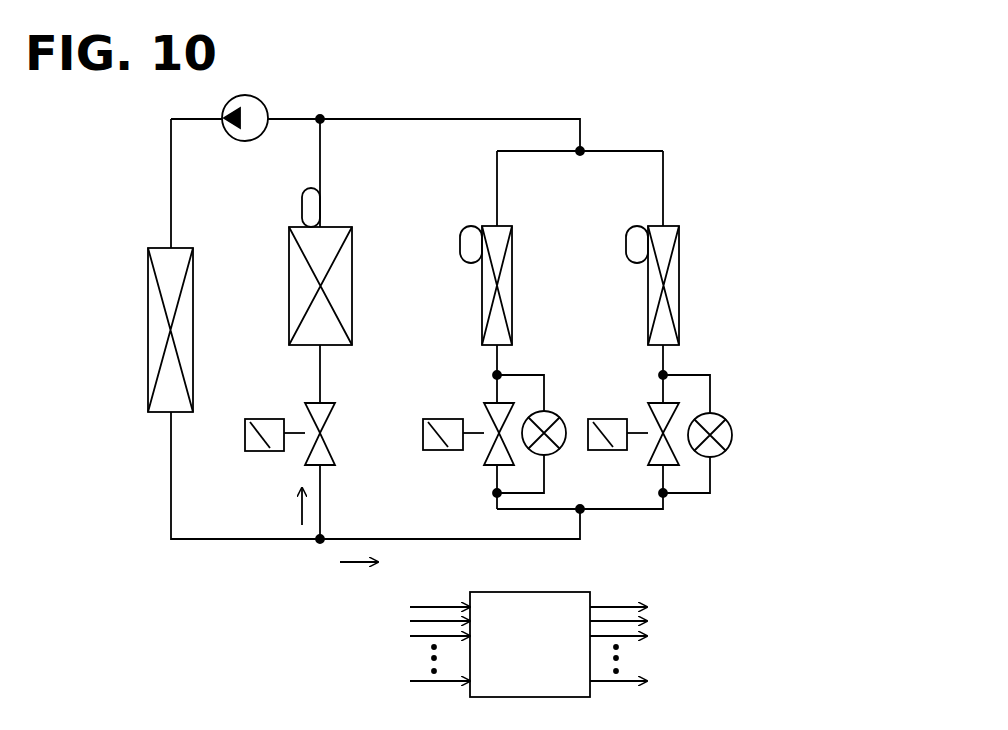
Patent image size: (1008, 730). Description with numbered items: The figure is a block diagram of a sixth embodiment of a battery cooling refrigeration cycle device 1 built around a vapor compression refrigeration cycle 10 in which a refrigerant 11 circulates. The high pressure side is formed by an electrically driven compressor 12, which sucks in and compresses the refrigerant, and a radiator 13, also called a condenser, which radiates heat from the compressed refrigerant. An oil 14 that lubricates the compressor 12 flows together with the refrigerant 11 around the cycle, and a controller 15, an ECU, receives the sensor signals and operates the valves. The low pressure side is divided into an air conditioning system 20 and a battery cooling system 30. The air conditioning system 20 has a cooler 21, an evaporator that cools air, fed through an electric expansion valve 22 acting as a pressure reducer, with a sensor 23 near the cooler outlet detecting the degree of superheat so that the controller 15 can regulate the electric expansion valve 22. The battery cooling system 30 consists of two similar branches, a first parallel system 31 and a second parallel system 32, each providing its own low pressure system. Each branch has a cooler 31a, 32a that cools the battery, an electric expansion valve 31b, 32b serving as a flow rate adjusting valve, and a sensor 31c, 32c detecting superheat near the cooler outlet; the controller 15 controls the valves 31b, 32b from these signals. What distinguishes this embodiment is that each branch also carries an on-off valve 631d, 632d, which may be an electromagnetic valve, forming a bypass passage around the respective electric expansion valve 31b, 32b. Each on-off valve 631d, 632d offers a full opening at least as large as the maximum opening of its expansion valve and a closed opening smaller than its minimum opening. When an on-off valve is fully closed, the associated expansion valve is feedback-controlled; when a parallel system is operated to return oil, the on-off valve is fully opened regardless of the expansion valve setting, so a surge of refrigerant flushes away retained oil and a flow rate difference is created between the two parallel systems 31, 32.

The battery cooling refrigeration cycle device 1 is at (838, 112).
The refrigeration cycle 10 is at (625, 112).
The refrigerant 11 is at (358, 118).
The compressor 12 is at (268, 106).
The radiator 13 is at (184, 248).
The oil 14 is at (172, 515).
The controller 15 is at (590, 593).
The air conditioning system 20 is at (338, 172).
The cooler 21 is at (340, 225).
The electric expansion valve 22 is at (305, 455).
The sensor 23 is at (300, 195).
The battery cooling system 30 is at (722, 140).
The first parallel system 31 is at (478, 218).
The cooler 31a is at (500, 222).
The electric expansion valve 31b is at (482, 455).
The sensor 31c is at (463, 263).
The second parallel system 32 is at (648, 218).
The cooler 32a is at (668, 222).
The electric expansion valve 32b is at (649, 455).
The sensor 32c is at (629, 263).
The on-off valve 631d is at (583, 397).
The on-off valve 632d is at (730, 413).